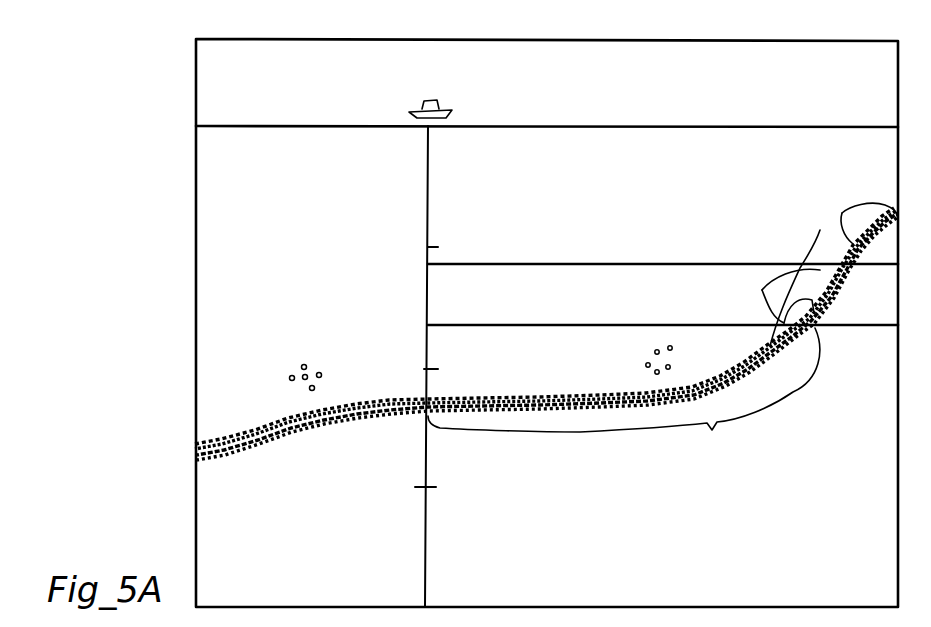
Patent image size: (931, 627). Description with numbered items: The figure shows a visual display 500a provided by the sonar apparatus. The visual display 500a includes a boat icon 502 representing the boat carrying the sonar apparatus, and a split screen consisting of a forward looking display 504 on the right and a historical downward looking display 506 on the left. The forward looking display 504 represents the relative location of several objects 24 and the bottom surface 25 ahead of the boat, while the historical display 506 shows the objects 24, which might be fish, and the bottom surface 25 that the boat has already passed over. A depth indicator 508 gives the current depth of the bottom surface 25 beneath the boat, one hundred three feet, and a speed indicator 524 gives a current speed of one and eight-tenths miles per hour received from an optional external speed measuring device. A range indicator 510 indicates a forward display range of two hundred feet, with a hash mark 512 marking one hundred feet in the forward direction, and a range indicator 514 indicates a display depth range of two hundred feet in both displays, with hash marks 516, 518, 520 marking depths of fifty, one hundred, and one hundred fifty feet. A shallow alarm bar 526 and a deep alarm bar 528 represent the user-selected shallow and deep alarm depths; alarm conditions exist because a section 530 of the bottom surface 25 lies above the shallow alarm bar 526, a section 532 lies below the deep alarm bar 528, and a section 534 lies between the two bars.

The visual display 500a is at (176, 208).
The boat icon 502 is at (420, 108).
The forward looking display 504 is at (584, 213).
The historical downward looking display 506 is at (337, 202).
The depth indicator 508 is at (205, 62).
The range indicator 510 is at (822, 101).
The hash mark 512 is at (662, 128).
The range indicator 514 is at (491, 556).
The hash mark 516 is at (428, 247).
The hash mark 518 is at (422, 368).
The hash mark 520 is at (418, 487).
The speed indicator 524 is at (450, 75).
The shallow alarm bar 526 is at (648, 325).
The deep alarm bar 528 is at (648, 264).
The section of the bottom surface 530 is at (842, 214).
The section of the bottom surface 532 is at (762, 290).
The section of the bottom surface 534 is at (840, 285).
The objects 24 is at (291, 368).
The bottom surface 25 is at (233, 438).